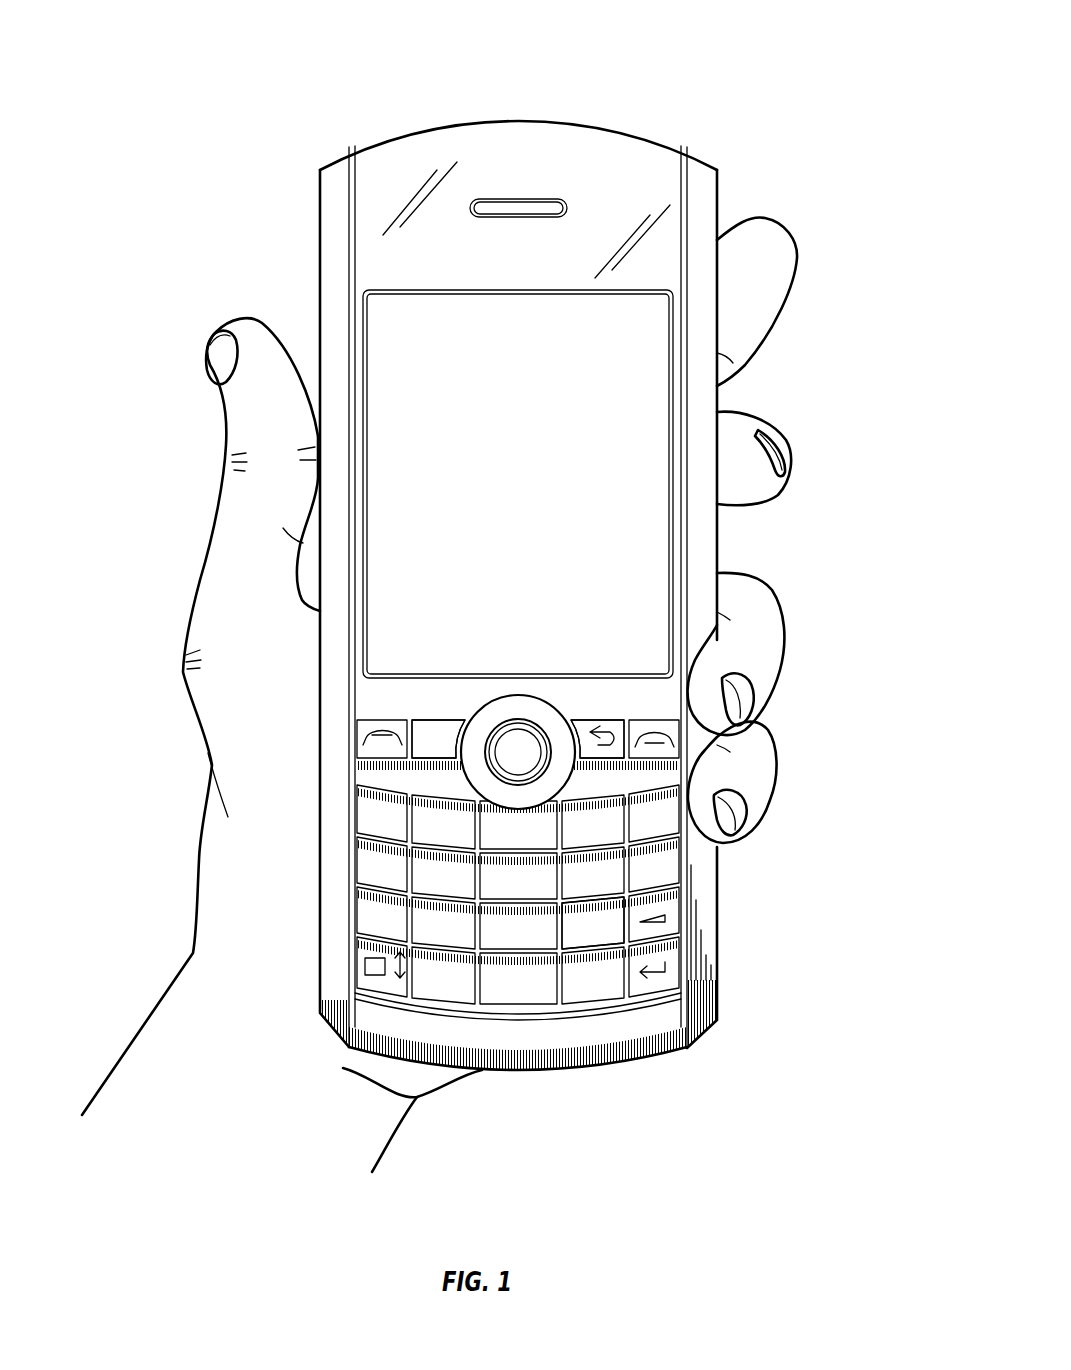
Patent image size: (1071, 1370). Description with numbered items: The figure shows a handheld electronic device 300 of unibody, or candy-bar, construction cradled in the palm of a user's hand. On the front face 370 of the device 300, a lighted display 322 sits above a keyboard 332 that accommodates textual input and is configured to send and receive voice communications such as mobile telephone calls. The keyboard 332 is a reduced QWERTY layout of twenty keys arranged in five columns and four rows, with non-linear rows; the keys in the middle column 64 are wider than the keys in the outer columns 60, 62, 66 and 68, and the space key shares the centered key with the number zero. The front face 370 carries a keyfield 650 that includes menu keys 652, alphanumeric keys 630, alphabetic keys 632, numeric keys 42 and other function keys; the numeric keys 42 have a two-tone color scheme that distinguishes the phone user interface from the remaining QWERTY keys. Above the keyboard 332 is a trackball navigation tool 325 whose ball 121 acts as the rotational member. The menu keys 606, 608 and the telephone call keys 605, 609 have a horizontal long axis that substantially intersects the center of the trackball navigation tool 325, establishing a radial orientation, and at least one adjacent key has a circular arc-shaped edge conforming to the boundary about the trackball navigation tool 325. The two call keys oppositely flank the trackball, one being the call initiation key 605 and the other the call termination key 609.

The handheld electronic device 300 is at (668, 57).
The front face 370 is at (703, 204).
The display 322 is at (392, 328).
The menu keys 652 is at (590, 712).
The menu key 606 is at (430, 727).
The menu key 608 is at (603, 727).
The call initiation key 605 is at (380, 737).
The call termination key 609 is at (672, 740).
The ball 121 is at (515, 748).
The trackball navigation tool 325 is at (555, 775).
The alphabetic keys 632 is at (350, 857).
The alphanumeric keys 630 is at (612, 918).
The keyfield 650 is at (367, 988).
The outer column 60 is at (400, 990).
The outer column 62 is at (430, 990).
The middle column 64 is at (520, 1000).
The numeric keys 42 is at (537, 980).
The outer column 66 is at (600, 995).
The outer column 68 is at (660, 990).
The keyboard 332 is at (532, 1035).